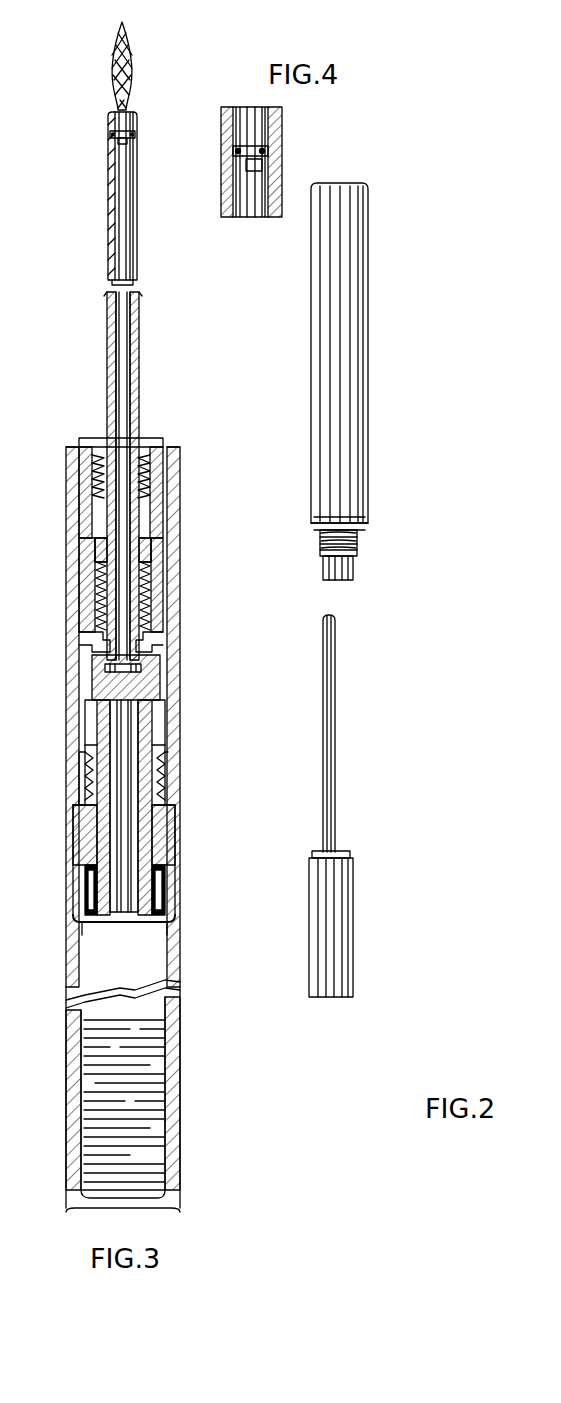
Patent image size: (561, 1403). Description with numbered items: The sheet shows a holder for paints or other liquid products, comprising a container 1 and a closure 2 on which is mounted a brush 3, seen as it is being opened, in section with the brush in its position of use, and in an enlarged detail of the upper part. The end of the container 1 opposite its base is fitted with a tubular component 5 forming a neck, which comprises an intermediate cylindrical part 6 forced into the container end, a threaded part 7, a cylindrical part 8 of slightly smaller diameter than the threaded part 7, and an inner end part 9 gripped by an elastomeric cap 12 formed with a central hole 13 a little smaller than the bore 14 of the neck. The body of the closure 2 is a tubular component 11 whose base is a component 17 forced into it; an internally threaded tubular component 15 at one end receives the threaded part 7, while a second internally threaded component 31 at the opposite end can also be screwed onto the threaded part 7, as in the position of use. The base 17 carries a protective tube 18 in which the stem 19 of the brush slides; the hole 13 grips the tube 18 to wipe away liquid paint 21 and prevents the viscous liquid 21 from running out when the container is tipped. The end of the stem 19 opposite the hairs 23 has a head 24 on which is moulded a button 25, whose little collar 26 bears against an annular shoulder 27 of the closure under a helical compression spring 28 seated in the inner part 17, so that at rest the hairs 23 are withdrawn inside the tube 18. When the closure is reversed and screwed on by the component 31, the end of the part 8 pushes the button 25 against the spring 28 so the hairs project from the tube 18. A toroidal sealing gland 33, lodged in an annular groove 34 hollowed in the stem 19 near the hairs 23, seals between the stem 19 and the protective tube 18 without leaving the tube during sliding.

In FIG. 3, the container 1 is at (170, 1022).
In FIG. 2, the container 1 is at (368, 360).
In FIG. 3, the closure 2 is at (58, 560).
In FIG. 2, the closure 2 is at (345, 1006).
In FIG. 3, the brush 3 is at (141, 286).
In FIG. 3, the tubular component forming a neck 5 is at (181, 821).
In FIG. 2, the tubular component forming a neck 5 is at (374, 528).
In FIG. 3, the intermediate cylindrical part 6 is at (93, 848).
In FIG. 3, the threaded part 7 is at (90, 768).
In FIG. 2, the threaded part 7 is at (358, 541).
In FIG. 3, the cylindrical part 8 is at (95, 720).
In FIG. 2, the cylindrical part 8 is at (355, 575).
In FIG. 3, the inner end part 9 is at (90, 900).
In FIG. 3, the tubular component 11 is at (165, 486).
In FIG. 3, the cap 12 is at (170, 928).
In FIG. 3, the central hole 13 is at (122, 922).
In FIG. 3, the bore 14 is at (150, 850).
In FIG. 3, the internally threaded tubular component 15 is at (90, 438).
In FIG. 2, the internally threaded tubular component 15 is at (346, 851).
In FIG. 3, the base component 17 is at (150, 550).
In FIG. 3, the protective tube 18 is at (137, 178).
In FIG. 4, the protective tube 18 is at (224, 120).
In FIG. 2, the protective tube 18 is at (336, 708).
In FIG. 3, the stem 19 is at (128, 242).
In FIG. 4, the stem 19 is at (250, 215).
In FIG. 3, the liquid paint 21 is at (150, 1085).
In FIG. 3, the hairs 23 is at (127, 64).
In FIG. 3, the head 24 is at (104, 670).
In FIG. 3, the button 25 is at (160, 665).
In FIG. 3, the collar 26 is at (82, 639).
In FIG. 3, the annular shoulder 27 is at (160, 740).
In FIG. 3, the helical compression spring 28 is at (152, 590).
In FIG. 3, the second internally threaded component 31 is at (158, 772).
In FIG. 3, the sealing gland 33 is at (136, 133).
In FIG. 4, the sealing gland 33 is at (268, 148).
In FIG. 3, the annular groove 34 is at (112, 141).
In FIG. 4, the annular groove 34 is at (262, 166).